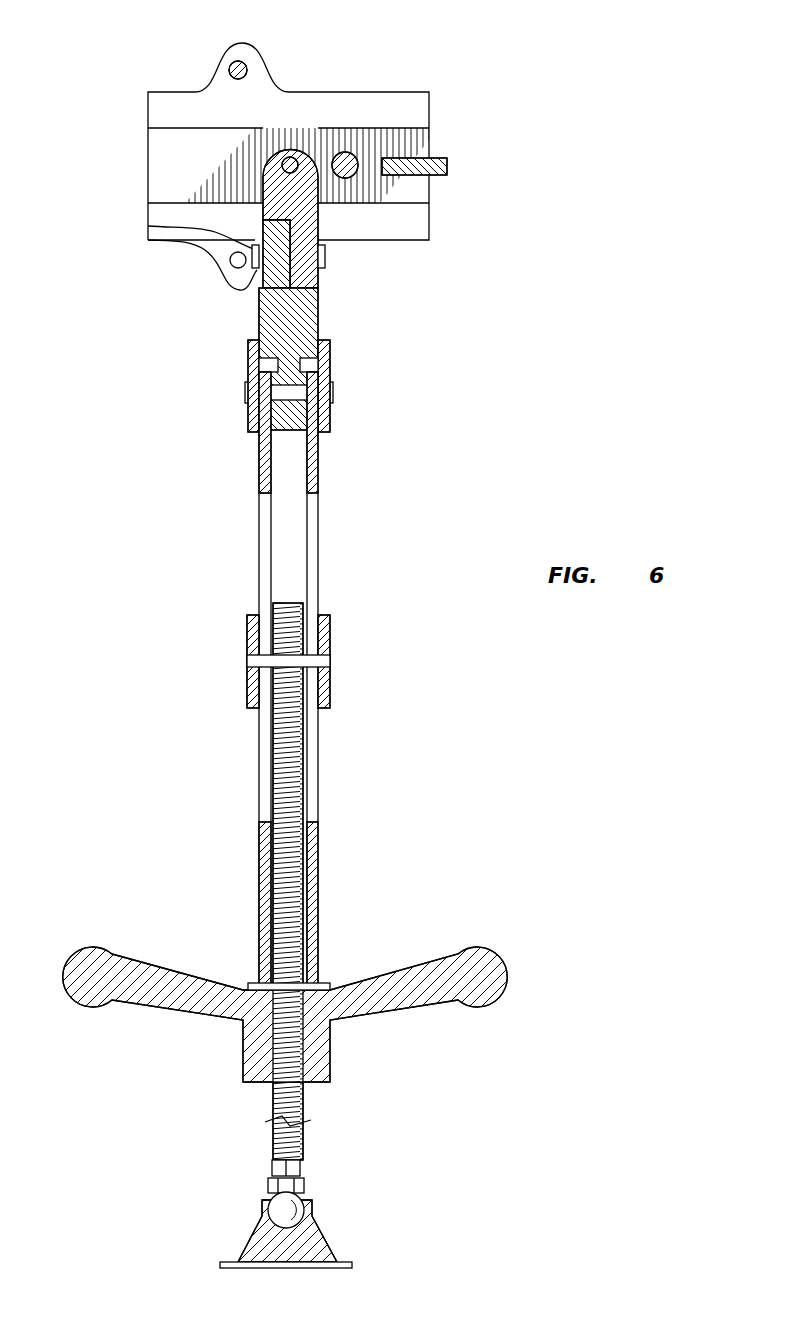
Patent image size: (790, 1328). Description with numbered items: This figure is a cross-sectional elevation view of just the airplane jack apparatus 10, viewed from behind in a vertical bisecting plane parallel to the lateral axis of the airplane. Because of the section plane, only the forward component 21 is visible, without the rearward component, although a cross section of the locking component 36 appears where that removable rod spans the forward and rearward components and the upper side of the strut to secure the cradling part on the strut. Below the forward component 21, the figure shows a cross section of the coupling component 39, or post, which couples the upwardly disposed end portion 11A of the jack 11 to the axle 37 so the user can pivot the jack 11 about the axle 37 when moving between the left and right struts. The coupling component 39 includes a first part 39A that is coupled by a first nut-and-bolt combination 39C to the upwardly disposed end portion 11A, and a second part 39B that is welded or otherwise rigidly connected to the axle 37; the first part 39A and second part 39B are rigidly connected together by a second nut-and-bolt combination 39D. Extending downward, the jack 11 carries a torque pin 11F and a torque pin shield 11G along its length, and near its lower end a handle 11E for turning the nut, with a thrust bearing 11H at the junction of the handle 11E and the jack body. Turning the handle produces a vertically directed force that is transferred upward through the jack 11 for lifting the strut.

The airplane jack apparatus 10 is at (570, 150).
The forward component 21 is at (135, 84).
The locking component 36 is at (231, 64).
The axle 37 is at (292, 158).
The coupling component 39 is at (284, 245).
The first part 39A is at (320, 300).
The second part 39B is at (322, 216).
The first nut-and-bolt combination 39C is at (332, 392).
The second nut-and-bolt combination 39D is at (148, 226).
The jack 11 is at (245, 826).
The upwardly disposed end portion 11A is at (238, 377).
The handle 11E is at (497, 958).
The torque pin 11F is at (247, 661).
The torque pin shield 11G is at (330, 636).
The thrust bearing 11H is at (322, 986).